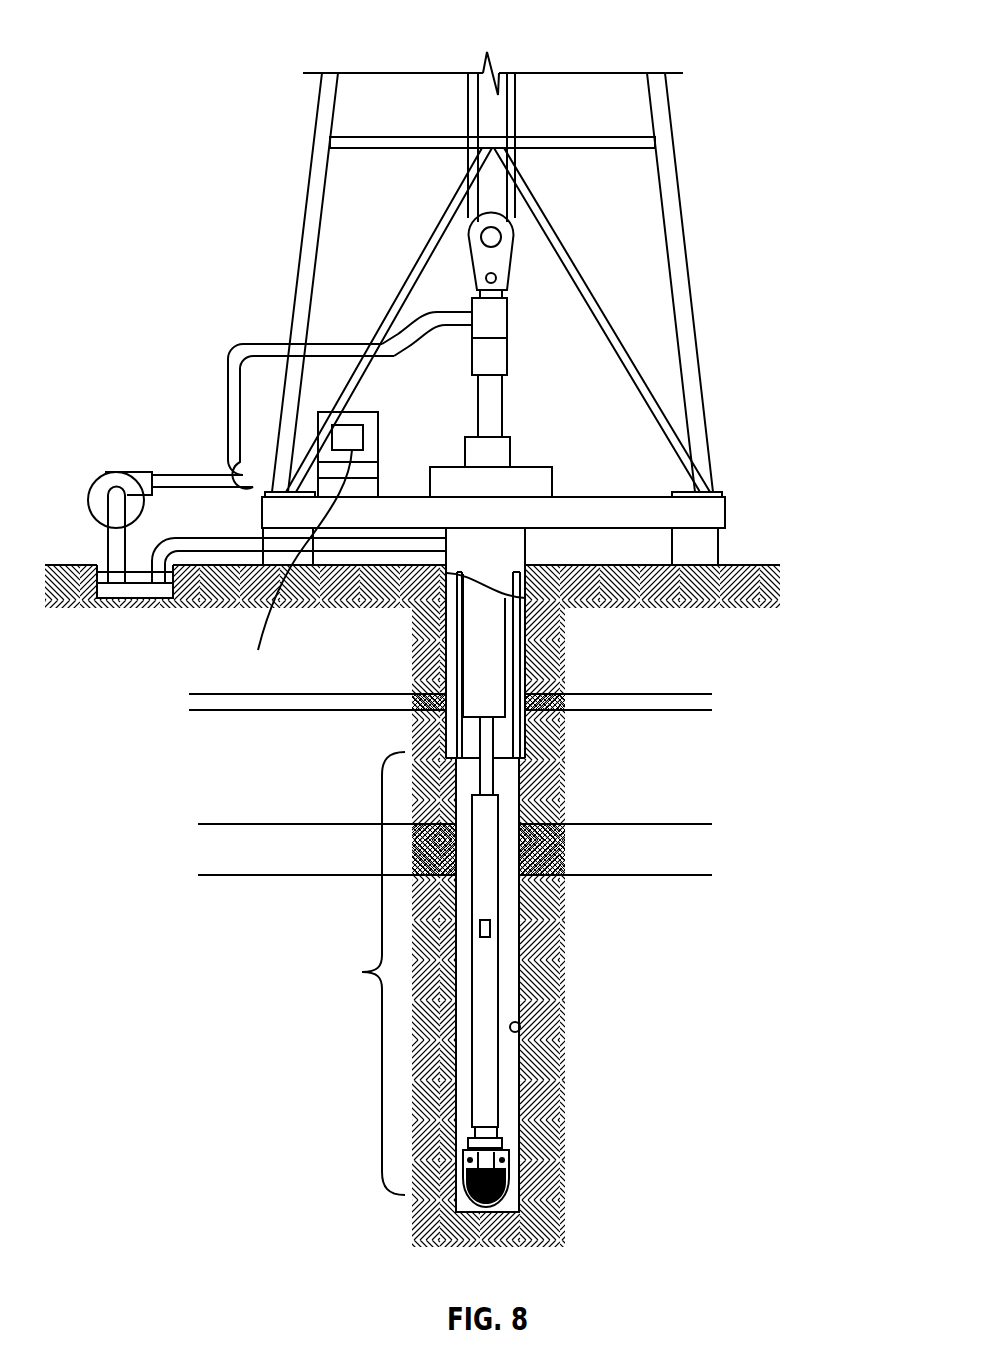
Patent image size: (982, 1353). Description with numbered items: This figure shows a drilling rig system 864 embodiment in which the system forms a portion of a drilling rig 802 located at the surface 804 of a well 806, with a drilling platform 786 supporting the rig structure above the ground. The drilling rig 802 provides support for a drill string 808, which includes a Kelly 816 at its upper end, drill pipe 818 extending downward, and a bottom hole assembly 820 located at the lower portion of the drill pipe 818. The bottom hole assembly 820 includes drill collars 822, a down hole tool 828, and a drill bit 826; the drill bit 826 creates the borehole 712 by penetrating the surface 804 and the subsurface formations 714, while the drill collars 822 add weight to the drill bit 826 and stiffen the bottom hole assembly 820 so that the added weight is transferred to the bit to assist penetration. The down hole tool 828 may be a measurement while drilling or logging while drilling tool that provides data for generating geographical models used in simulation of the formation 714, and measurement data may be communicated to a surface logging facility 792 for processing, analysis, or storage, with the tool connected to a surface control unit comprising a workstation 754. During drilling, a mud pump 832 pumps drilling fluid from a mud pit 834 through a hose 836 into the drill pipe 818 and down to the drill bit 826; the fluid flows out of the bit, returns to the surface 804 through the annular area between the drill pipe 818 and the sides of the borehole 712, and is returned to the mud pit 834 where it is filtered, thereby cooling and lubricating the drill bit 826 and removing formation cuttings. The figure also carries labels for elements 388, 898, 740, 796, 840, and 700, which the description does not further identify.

The drilling rig system 864 is at (243, 40).
The drilling rig 802 is at (690, 230).
The derrick leg 388 is at (683, 177).
The Kelly 816 is at (505, 405).
The top drive coupling 898 is at (513, 452).
The wellhead block 740 is at (456, 467).
The surface logging facility 792 is at (388, 370).
The hose 836 is at (232, 352).
The mud pump 832 is at (123, 472).
The mud pit 834 is at (133, 598).
The workstation 754 is at (366, 412).
The communication cable 796 is at (289, 569).
The drilling platform 786 is at (728, 510).
The well 806 is at (533, 555).
The surface 804 is at (758, 565).
The drill collars 822 is at (505, 633).
The drill pipe 818 is at (490, 737).
The wellbore 840 is at (503, 777).
The subsurface formations 714 is at (173, 693).
The bottom hole assembly 820 is at (351, 973).
The drill string 808 is at (508, 981).
The downhole tool 700 is at (490, 928).
The borehole 712 is at (520, 1027).
The down hole tool 828 is at (490, 1072).
The drill bit 826 is at (510, 1163).